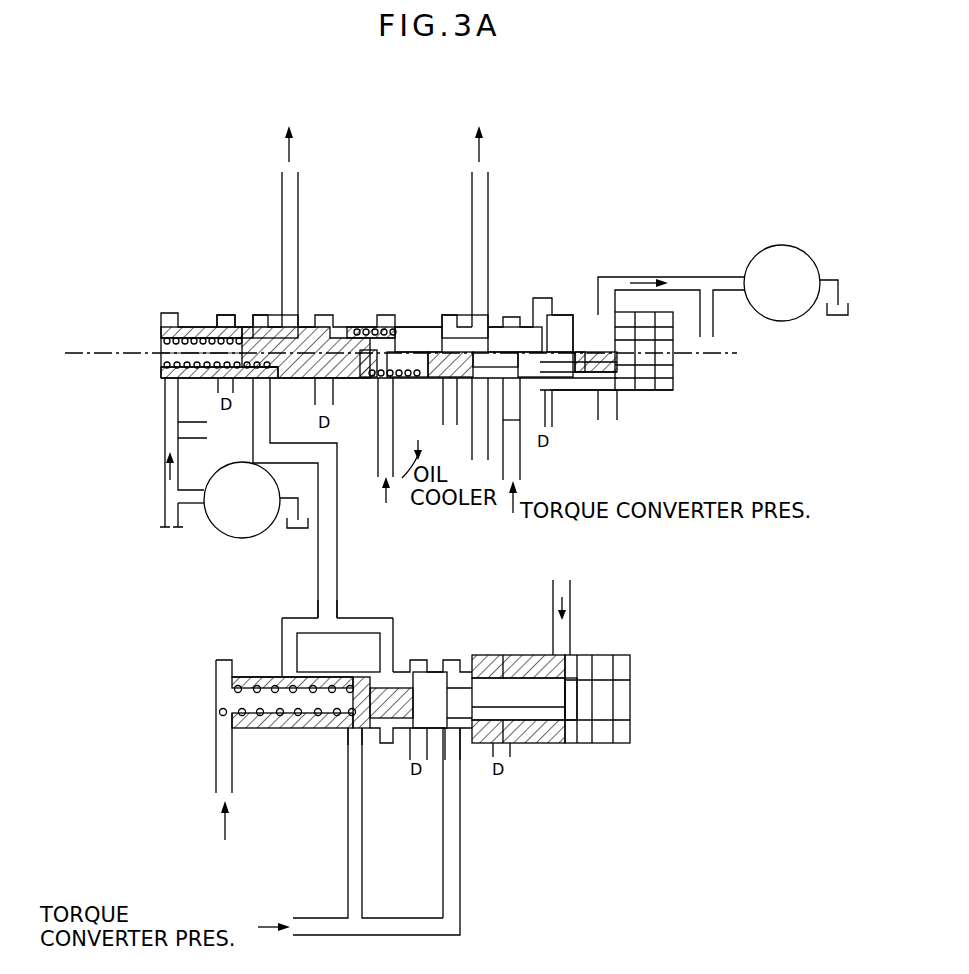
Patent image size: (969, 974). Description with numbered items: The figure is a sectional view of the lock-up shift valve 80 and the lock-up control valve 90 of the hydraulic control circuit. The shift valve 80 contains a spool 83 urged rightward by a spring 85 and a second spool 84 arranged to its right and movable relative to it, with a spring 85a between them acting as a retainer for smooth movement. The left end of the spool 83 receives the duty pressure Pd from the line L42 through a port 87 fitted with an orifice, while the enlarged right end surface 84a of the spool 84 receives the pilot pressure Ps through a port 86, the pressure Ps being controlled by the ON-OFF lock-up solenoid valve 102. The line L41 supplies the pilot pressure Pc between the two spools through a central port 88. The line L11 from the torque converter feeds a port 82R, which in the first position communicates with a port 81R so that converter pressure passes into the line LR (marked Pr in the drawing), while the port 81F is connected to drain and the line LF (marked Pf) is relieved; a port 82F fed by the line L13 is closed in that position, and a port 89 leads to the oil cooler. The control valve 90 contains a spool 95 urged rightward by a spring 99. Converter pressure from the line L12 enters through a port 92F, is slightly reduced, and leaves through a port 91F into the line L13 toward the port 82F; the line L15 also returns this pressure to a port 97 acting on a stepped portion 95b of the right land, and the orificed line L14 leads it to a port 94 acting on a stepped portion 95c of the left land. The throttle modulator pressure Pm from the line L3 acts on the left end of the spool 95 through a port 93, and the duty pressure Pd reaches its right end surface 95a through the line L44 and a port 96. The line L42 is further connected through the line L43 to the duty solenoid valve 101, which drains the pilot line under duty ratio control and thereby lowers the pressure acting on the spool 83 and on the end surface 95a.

The lock-up shift valve 80 is at (660, 424).
The port 81F is at (294, 328).
The port 81R is at (480, 330).
The port 82F is at (268, 380).
The port 82R is at (512, 378).
The spool 83 is at (247, 327).
The spool 84 is at (548, 312).
The right end surface 84a is at (582, 330).
The spring 85 is at (180, 363).
The spring 85a is at (372, 327).
The port 86 is at (604, 325).
The port 87 is at (172, 379).
The port 88 is at (380, 378).
The port 89 is at (452, 378).
The lock-up control valve 90 is at (678, 583).
The port 91F is at (385, 672).
The port 92F is at (347, 765).
The port 93 is at (233, 729).
The port 94 is at (290, 665).
The spool 95 is at (527, 690).
The right end surface 95a is at (568, 695).
The stepped portion 95b is at (463, 675).
The stepped portion 95c is at (306, 676).
The port 96 is at (568, 655).
The port 97 is at (458, 772).
The spring 99 is at (217, 680).
The duty solenoid valve 101 is at (255, 538).
The lock-up solenoid valve 102 is at (782, 245).
The line L3 is at (215, 775).
The line L11 is at (523, 470).
The line L12 is at (363, 841).
The line L13 is at (338, 548).
The line L14 is at (307, 617).
The line L15 is at (461, 890).
The line L41 is at (380, 460).
The line L42 is at (164, 443).
The line L43 is at (200, 505).
The line L44 is at (205, 423).
The line LF is at (300, 208).
The line LR is at (490, 218).
The forward clutch pressure Pf is at (303, 145).
The reverse clutch pressure Pr is at (494, 145).
The pilot pressure Pc is at (397, 504).
The duty pressure Pd is at (160, 472).
The throttle modulator pressure Pm is at (222, 830).
The pilot pressure Ps is at (655, 278).